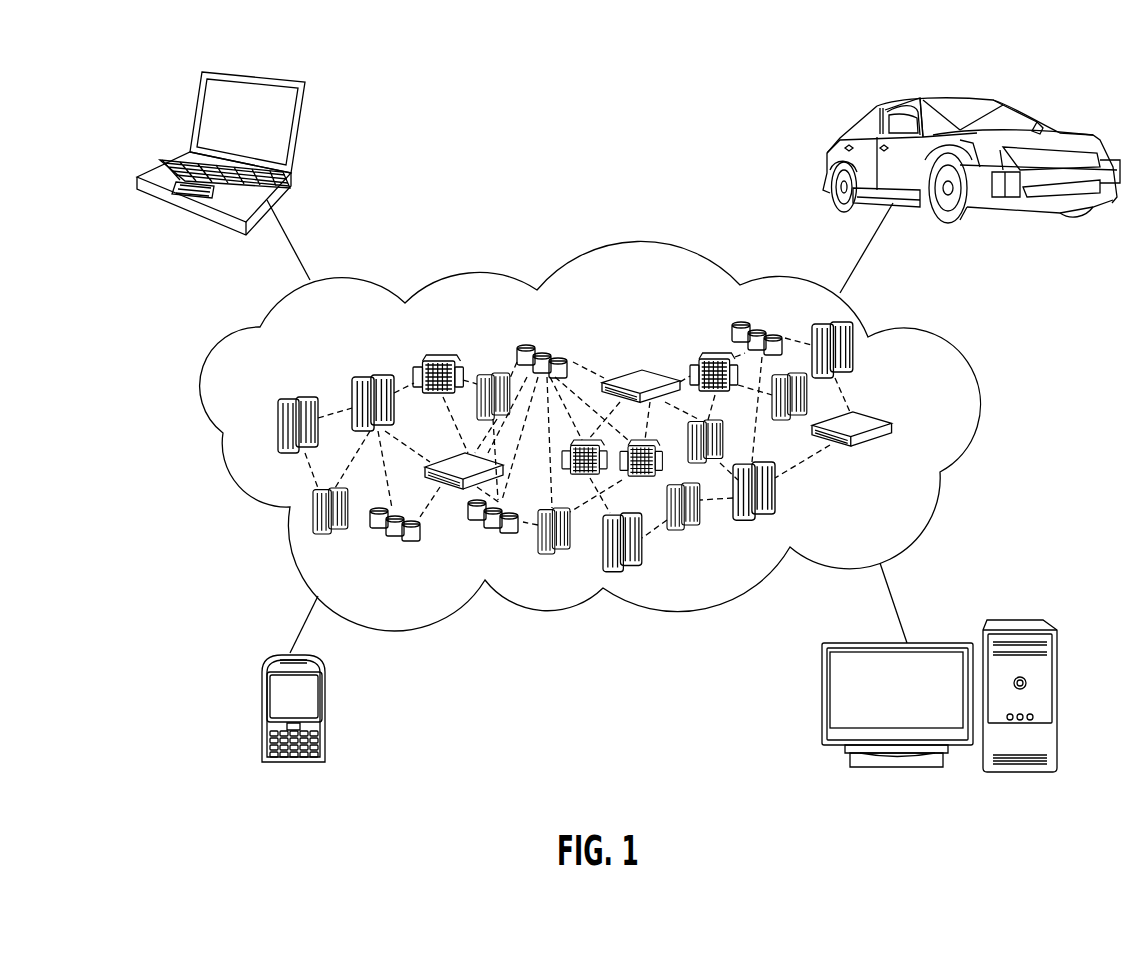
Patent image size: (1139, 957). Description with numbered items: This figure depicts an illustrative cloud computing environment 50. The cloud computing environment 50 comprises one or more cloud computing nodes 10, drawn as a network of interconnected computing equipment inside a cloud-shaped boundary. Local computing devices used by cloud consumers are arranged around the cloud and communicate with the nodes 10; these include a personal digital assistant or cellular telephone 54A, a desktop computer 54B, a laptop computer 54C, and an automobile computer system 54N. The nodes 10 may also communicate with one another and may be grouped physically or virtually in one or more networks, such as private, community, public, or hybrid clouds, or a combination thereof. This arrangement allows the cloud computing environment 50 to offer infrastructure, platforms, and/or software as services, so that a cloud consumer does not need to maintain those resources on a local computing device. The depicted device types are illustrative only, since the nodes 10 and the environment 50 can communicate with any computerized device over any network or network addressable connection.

The cloud computing node 10 is at (927, 425).
The cloud computing environment 50 is at (950, 345).
The personal digital assistant or cellular telephone 54A is at (263, 710).
The desktop computer 54B is at (1023, 620).
The laptop computer 54C is at (305, 132).
The automobile computer system 54N is at (833, 142).